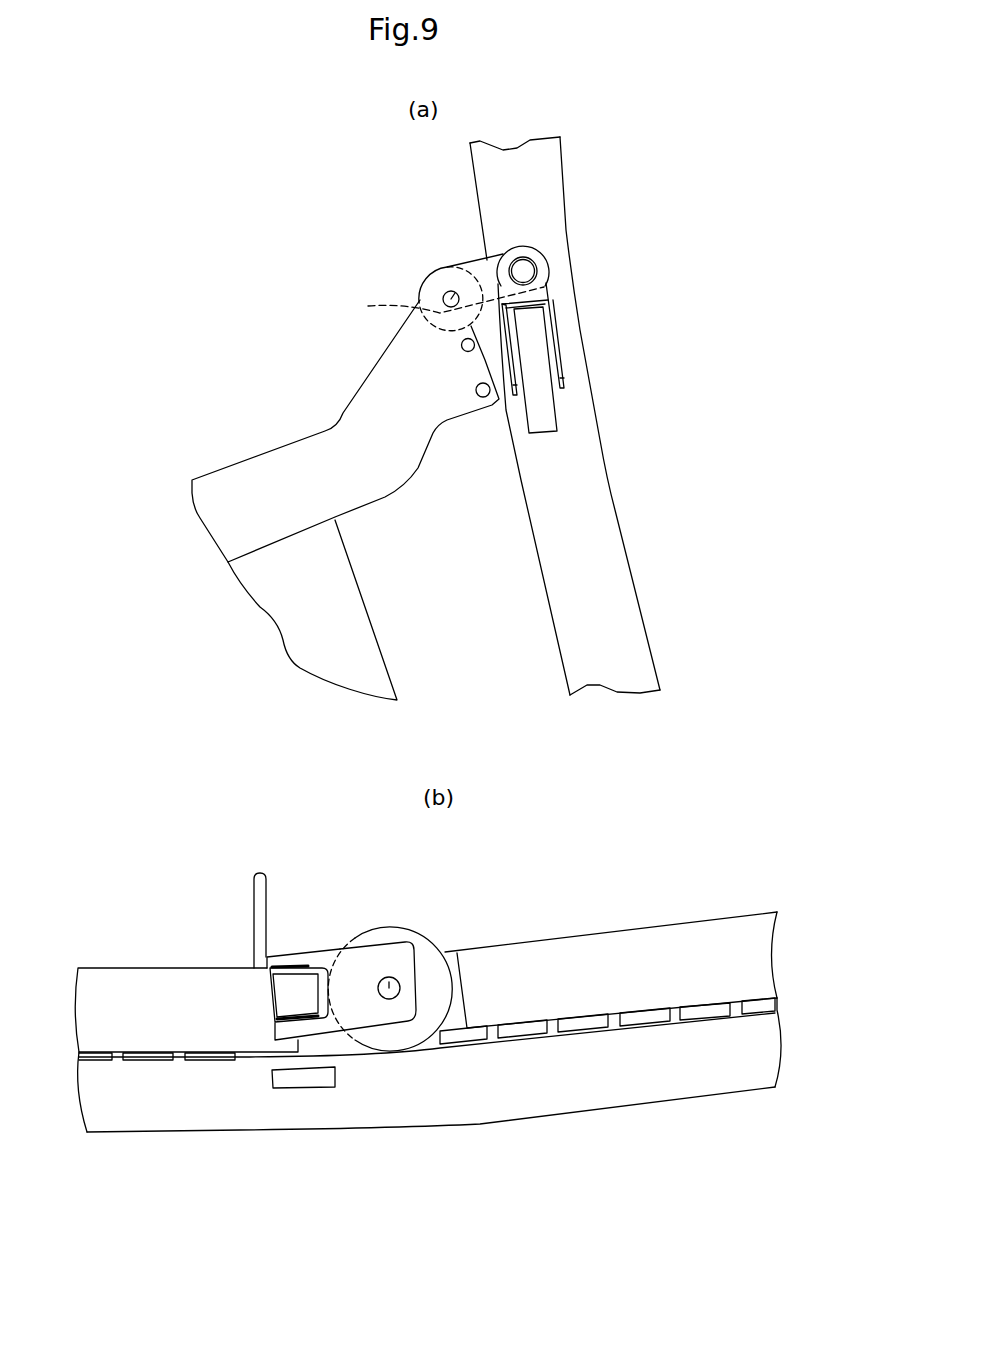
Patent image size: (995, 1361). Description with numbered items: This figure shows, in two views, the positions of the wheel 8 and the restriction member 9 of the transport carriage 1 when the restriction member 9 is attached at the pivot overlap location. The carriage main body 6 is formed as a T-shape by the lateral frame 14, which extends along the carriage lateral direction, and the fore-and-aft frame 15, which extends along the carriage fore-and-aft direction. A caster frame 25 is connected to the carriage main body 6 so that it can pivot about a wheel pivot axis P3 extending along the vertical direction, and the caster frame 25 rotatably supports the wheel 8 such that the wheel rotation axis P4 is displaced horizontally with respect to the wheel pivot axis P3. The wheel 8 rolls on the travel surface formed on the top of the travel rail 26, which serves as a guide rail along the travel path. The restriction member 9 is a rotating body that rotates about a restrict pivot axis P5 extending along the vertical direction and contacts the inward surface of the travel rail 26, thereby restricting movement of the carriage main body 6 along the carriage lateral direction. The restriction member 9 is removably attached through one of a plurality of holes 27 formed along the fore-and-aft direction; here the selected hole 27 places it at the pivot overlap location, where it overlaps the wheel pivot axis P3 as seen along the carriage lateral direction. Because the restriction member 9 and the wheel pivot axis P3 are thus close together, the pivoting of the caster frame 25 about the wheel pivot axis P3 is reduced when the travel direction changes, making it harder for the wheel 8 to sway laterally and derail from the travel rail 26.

The transport carriage 1 is at (165, 502).
The carriage main body 6 is at (361, 591).
The wheel 8 is at (550, 407).
The restriction member 9 is at (430, 278).
The lateral frame 14 is at (263, 460).
The fore-and-aft frame 15 is at (203, 978).
The caster frame 25 is at (563, 356).
The travel rail 26 is at (600, 512).
The hole 27 is at (476, 391).
The wheel pivot axis P3 is at (523, 271).
The wheel rotation axis P4 is at (507, 373).
The restrict pivot axis P5 is at (452, 296).